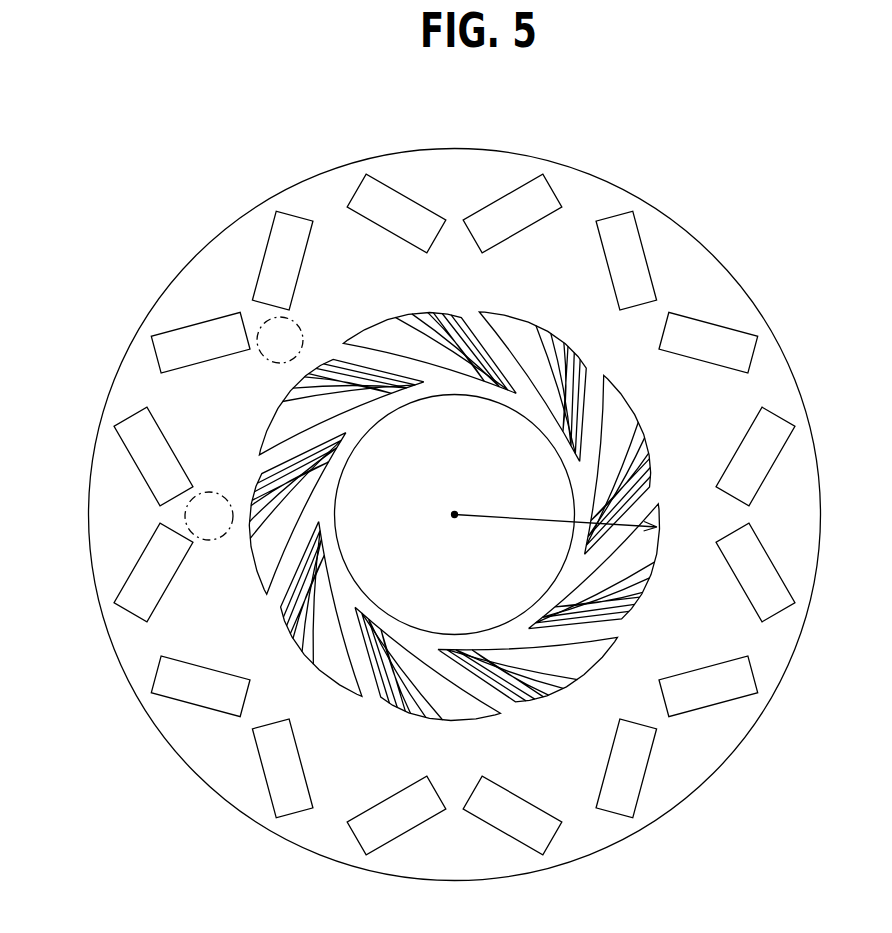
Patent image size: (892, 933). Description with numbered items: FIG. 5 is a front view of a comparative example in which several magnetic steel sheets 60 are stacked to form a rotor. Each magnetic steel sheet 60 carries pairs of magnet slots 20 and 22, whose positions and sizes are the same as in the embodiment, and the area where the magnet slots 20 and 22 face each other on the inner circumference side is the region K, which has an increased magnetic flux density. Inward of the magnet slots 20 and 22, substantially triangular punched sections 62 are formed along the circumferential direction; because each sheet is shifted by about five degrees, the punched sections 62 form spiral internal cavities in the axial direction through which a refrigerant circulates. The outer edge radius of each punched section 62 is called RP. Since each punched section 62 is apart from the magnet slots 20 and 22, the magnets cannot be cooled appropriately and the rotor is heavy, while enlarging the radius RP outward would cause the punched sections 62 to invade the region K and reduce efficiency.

The magnetic steel sheet 60 is at (455, 165).
The punched section 62 is at (354, 600).
The outer edge radius RP is at (486, 515).
The magnet slot 20 is at (307, 248).
The magnet slot 22 is at (375, 224).
The region K is at (265, 325).